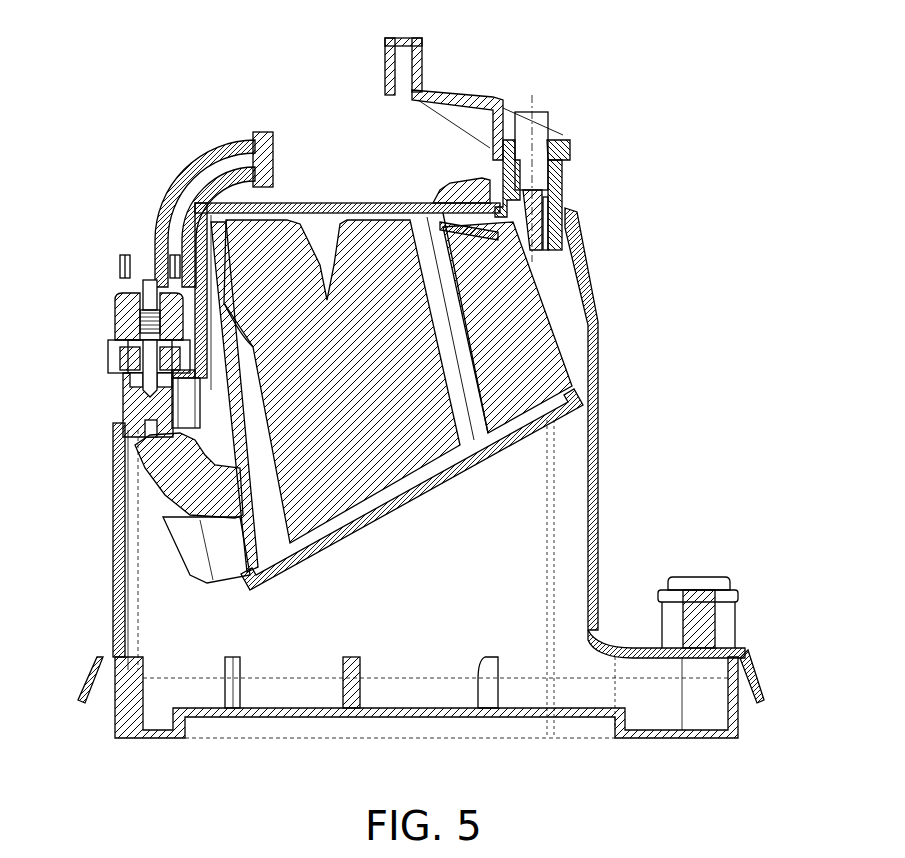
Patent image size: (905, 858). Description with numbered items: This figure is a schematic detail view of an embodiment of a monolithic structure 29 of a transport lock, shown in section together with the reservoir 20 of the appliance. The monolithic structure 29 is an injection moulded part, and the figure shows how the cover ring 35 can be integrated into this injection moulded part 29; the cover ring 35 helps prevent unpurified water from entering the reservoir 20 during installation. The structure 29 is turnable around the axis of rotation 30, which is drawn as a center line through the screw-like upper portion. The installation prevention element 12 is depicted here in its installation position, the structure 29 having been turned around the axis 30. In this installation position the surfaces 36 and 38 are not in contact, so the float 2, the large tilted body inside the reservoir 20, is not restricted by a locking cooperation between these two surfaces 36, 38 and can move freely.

The float 2 is at (375, 480).
The installation prevention element 12 is at (383, 70).
The reservoir 20 is at (342, 203).
The monolithic structure 29 is at (571, 77).
The axis of rotation 30 is at (533, 133).
The cover ring 35 is at (497, 142).
The surface 36 is at (563, 233).
The surface 38 is at (541, 252).